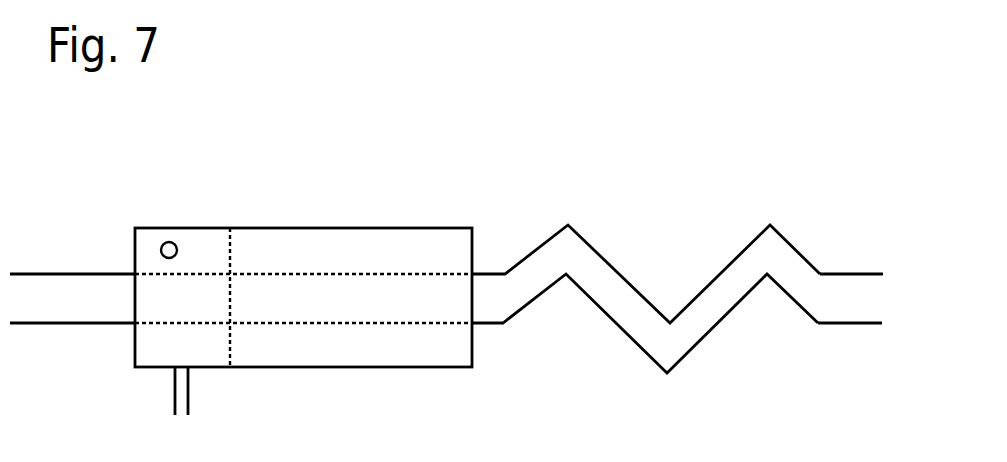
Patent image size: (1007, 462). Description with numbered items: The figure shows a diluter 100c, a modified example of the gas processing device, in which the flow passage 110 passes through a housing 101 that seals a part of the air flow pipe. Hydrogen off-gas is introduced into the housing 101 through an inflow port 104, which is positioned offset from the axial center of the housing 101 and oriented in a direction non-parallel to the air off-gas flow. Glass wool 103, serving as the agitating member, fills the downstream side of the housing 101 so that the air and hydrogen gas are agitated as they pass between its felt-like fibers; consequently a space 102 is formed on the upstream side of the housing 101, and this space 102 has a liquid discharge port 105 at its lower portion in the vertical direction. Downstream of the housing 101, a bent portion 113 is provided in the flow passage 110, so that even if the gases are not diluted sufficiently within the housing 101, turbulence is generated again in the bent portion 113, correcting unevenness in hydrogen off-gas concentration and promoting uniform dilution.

The diluter 100c is at (582, 428).
The housing 101 is at (465, 228).
The space 102 is at (200, 253).
The glass wool 103 is at (295, 253).
The inflow port 104 is at (156, 228).
The liquid discharge port 105 is at (190, 385).
The flow passage 110 is at (863, 274).
The bent portion 113 is at (755, 232).